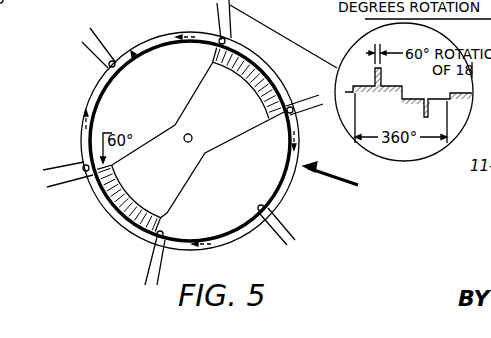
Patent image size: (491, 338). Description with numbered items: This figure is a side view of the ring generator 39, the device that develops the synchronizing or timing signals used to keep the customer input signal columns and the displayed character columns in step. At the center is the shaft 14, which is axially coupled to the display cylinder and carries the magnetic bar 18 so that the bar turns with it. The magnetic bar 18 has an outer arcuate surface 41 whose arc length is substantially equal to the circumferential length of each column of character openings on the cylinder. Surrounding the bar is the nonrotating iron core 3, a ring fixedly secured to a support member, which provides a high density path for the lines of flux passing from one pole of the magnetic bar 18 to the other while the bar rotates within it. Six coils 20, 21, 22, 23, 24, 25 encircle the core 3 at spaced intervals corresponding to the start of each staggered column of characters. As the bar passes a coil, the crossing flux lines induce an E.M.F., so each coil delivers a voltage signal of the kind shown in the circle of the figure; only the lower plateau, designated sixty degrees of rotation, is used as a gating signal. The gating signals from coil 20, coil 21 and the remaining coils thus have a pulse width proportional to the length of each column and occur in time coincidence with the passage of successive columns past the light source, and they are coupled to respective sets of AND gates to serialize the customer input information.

The iron core 3 is at (293, 180).
The shaft 14 is at (184, 138).
The magnetic bar 18 is at (235, 139).
The coil 20 is at (217, 5).
The coil 21 is at (303, 117).
The coil 22 is at (285, 218).
The coil 23 is at (143, 275).
The coil 24 is at (73, 152).
The coil 25 is at (108, 50).
The ring generator 39 is at (340, 180).
The outer arcuate surface 41 is at (262, 68).